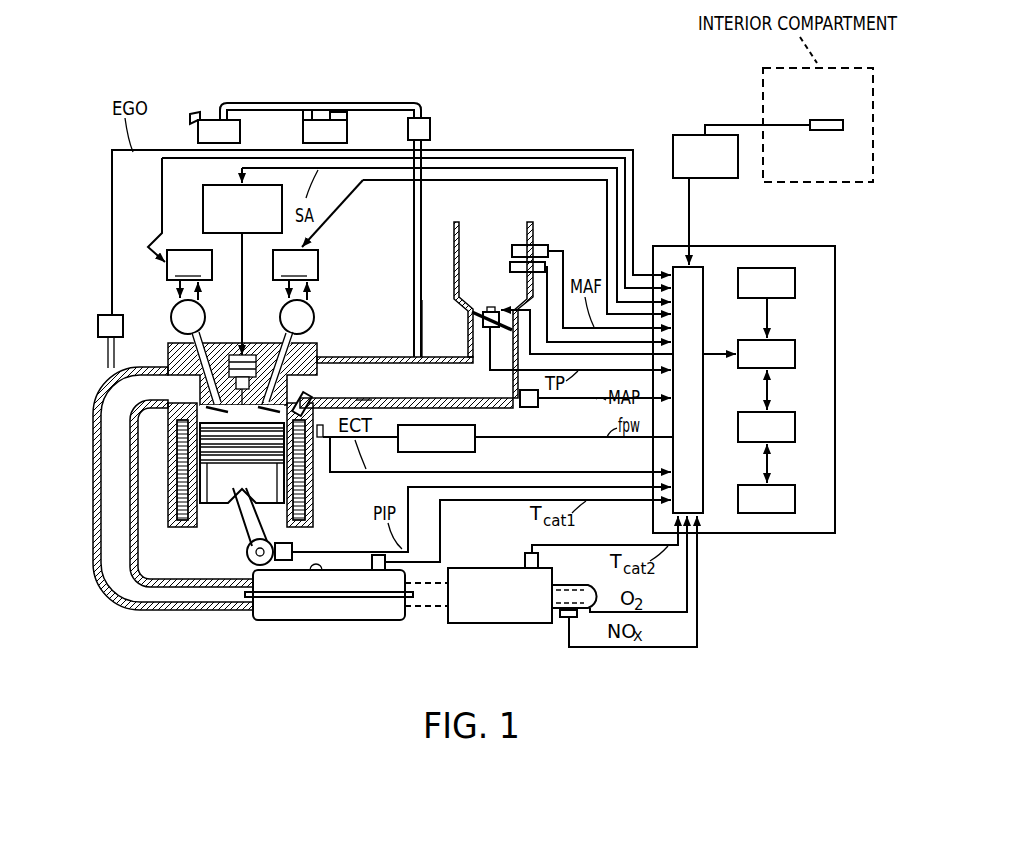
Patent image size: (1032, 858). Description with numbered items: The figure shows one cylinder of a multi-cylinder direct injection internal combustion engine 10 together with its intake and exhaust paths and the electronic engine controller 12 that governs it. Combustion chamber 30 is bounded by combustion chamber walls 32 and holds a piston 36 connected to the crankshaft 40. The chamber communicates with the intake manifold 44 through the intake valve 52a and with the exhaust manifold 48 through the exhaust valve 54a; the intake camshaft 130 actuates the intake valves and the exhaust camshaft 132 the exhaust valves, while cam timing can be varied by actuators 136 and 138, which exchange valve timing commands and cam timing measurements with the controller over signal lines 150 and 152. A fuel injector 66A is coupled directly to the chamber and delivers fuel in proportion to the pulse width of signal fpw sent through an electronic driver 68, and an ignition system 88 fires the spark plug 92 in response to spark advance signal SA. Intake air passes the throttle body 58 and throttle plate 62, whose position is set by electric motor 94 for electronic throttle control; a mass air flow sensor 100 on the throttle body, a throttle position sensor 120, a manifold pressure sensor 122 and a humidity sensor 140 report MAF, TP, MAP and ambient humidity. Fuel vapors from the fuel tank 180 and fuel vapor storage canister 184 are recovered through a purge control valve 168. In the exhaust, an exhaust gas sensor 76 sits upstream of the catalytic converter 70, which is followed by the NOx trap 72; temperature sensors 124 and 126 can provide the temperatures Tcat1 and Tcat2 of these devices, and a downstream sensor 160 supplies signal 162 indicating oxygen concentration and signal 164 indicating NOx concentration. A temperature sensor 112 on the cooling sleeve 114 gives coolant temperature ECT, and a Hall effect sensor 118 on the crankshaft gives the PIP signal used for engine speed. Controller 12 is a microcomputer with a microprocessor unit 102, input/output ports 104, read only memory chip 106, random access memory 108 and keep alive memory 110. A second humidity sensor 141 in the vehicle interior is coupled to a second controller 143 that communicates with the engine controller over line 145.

The direct injection internal combustion engine 10 is at (325, 301).
The electronic engine controller 12 is at (745, 245).
The combustion chamber 30 is at (170, 462).
The combustion chamber walls 32 is at (186, 537).
The piston 36 is at (237, 495).
The crankshaft 40 is at (247, 554).
The intake manifold 44 is at (455, 393).
The exhaust manifold 48 is at (103, 412).
The intake valve 52a is at (262, 347).
The exhaust valve 54a is at (214, 398).
The throttle body 58 is at (464, 348).
The throttle plate 62 is at (455, 293).
The fuel injector 66A is at (306, 395).
The electronic driver 68 is at (476, 449).
The catalytic converter 70 is at (320, 573).
The NOx trap 72 is at (478, 566).
The exhaust gas sensor 76 is at (104, 313).
The ignition system 88 is at (217, 184).
The spark plug 92 is at (223, 343).
The electric motor 94 is at (489, 305).
The mass air flow sensor 100 is at (549, 247).
The microprocessor unit 102 is at (796, 355).
The input/output ports 104 is at (704, 300).
The read only memory chip 106 is at (796, 284).
The random access memory 108 is at (796, 428).
The keep alive memory 110 is at (796, 500).
The temperature sensor 112 is at (356, 400).
The cooling sleeve 114 is at (314, 492).
The Hall effect sensor 118 is at (293, 547).
The throttle position sensor 120 is at (474, 320).
The manifold pressure sensor 122 is at (539, 404).
The temperature sensor 124 is at (378, 573).
The temperature sensor 126 is at (539, 561).
The intake camshaft 130 is at (314, 322).
The exhaust camshaft 132 is at (172, 312).
The cam timing actuator 136 is at (295, 275).
The cam timing actuator 138 is at (189, 275).
The humidity sensor 140 is at (511, 252).
The second humidity sensor 141 is at (823, 120).
The second controller 143 is at (688, 134).
The line 145 is at (687, 208).
The signal line 150 is at (340, 207).
The signal line 152 is at (160, 195).
The exhaust gas sensor 160 is at (565, 620).
The signal 162 is at (688, 589).
The signal 164 is at (698, 553).
The purge control valve 168 is at (431, 129).
The fuel tank 180 is at (241, 134).
The fuel vapor storage canister 184 is at (348, 135).